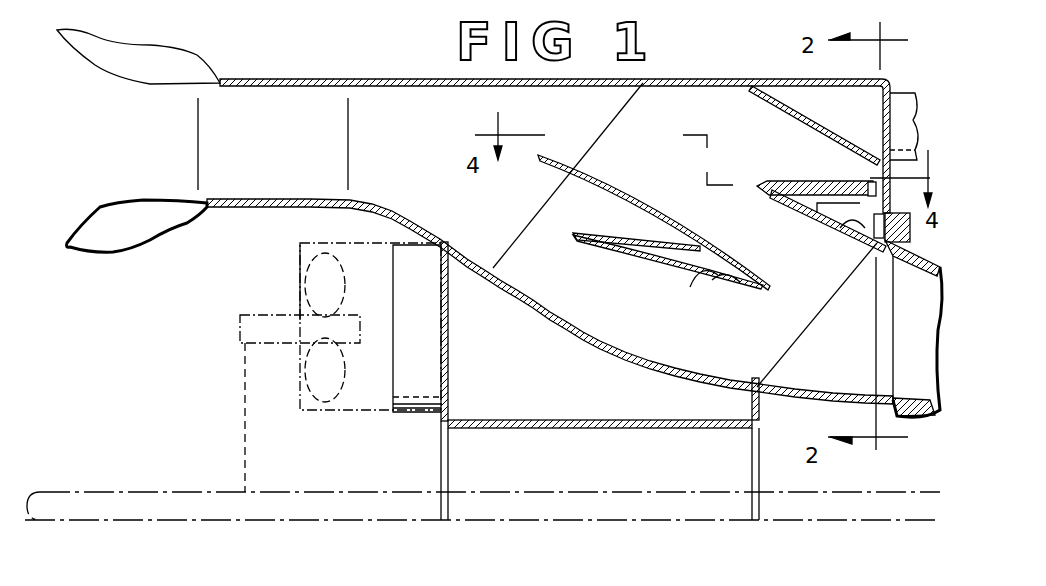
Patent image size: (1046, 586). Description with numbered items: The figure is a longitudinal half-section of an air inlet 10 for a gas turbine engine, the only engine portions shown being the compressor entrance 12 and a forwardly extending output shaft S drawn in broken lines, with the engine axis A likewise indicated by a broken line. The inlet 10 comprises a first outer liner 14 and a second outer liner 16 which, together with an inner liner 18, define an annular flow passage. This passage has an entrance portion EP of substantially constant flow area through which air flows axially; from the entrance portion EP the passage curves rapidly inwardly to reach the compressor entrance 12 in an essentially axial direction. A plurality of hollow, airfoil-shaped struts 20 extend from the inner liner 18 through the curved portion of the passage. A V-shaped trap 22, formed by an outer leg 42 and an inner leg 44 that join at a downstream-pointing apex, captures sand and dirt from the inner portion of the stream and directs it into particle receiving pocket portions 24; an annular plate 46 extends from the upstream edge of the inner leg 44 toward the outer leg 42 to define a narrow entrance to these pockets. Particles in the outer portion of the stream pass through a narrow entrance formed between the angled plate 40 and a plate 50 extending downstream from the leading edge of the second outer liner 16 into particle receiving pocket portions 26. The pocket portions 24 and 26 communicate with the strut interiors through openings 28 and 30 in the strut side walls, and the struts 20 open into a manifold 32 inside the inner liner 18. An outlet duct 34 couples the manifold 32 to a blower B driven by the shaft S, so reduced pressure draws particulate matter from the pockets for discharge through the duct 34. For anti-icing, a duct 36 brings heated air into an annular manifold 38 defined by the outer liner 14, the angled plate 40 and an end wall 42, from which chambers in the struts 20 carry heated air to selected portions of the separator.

The air inlet 10 is at (340, 58).
The compressor entrance 12 is at (908, 323).
The first outer liner 14 is at (468, 86).
The second outer liner 16 is at (795, 207).
The inner liner 18 is at (560, 322).
The struts 20 is at (817, 315).
The V-shaped trap 22 is at (670, 190).
The particle receiving pocket portions 24 is at (712, 282).
The particle receiving pocket portions 26 is at (853, 232).
The openings 28 is at (700, 283).
The openings 30 is at (843, 212).
The manifold 32 is at (553, 422).
The outlet duct 34 is at (430, 410).
The duct 36 is at (905, 93).
The annular manifold 38 is at (838, 105).
The angled plate 40 is at (788, 117).
The end wall / outer leg 42 is at (580, 163).
The inner leg 44 is at (655, 262).
The annular plate 46 is at (625, 240).
The plate 50 is at (812, 183).
The blower B is at (300, 258).
The output shaft S is at (65, 492).
The engine axis A is at (620, 520).
The entrance portion EP is at (200, 150).